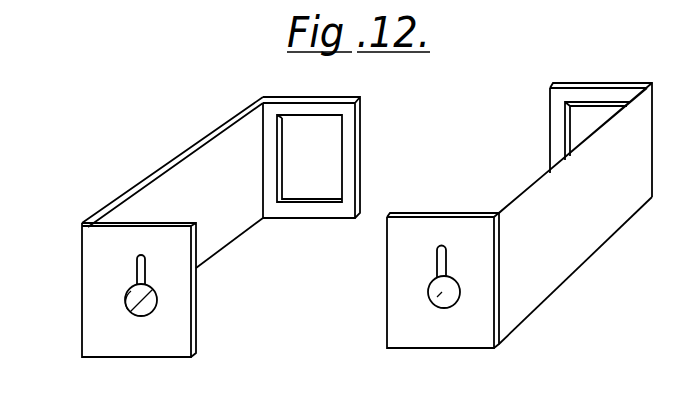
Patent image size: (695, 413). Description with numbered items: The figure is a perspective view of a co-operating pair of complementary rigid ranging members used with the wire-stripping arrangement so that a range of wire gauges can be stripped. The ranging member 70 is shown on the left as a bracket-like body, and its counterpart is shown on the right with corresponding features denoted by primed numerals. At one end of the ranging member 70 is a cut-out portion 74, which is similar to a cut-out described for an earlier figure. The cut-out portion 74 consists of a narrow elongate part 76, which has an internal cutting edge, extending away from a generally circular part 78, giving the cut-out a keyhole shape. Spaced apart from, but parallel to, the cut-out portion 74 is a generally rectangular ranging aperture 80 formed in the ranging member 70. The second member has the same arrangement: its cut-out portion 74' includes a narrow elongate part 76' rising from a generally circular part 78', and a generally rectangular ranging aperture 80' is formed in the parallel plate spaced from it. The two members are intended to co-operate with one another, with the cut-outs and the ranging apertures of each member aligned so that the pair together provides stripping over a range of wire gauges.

The ranging member 70 is at (187, 138).
The cut-out portion 74 is at (114, 298).
The narrow elongate part 76 is at (89, 264).
The generally circular part 78 is at (95, 300).
The ranging aperture 80 is at (336, 157).
The cut-out portion 74' is at (418, 255).
The narrow elongate part 76' is at (464, 219).
The generally circular part 78' is at (399, 310).
The ranging aperture 80' is at (568, 140).